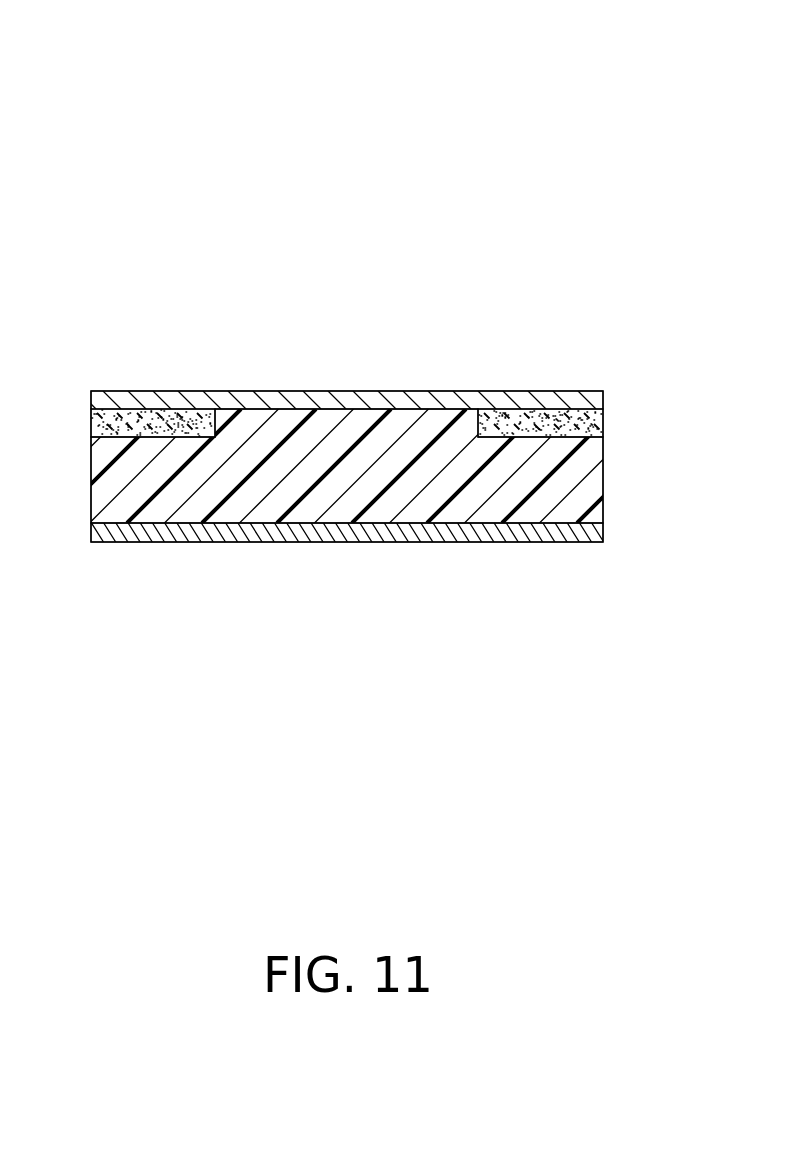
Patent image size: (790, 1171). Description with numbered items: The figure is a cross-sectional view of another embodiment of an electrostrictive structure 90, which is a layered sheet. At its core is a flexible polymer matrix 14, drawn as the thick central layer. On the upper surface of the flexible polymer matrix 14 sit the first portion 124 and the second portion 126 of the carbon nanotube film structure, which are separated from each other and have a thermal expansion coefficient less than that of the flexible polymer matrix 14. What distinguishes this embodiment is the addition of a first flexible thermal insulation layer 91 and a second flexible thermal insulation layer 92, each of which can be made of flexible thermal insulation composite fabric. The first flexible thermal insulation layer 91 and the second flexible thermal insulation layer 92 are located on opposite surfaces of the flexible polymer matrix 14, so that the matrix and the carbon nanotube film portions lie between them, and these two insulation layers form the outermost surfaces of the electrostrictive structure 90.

The electrostrictive structure 90 is at (358, 44).
The first flexible thermal insulation layer 91 is at (395, 400).
The flexible polymer matrix 14 is at (562, 476).
The first portion 124 is at (144, 416).
The second portion 126 is at (548, 422).
The second flexible thermal insulation layer 92 is at (553, 531).